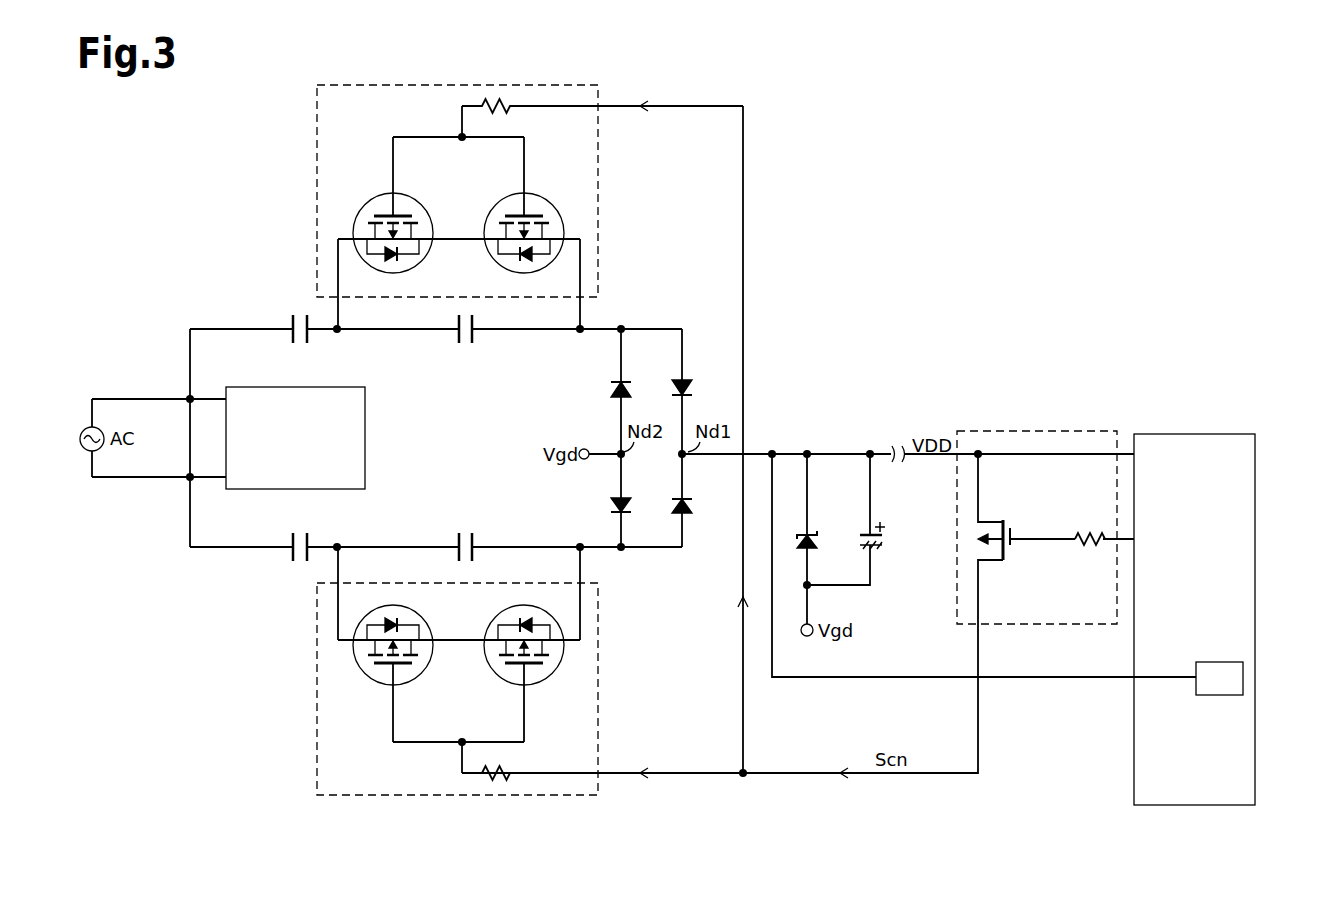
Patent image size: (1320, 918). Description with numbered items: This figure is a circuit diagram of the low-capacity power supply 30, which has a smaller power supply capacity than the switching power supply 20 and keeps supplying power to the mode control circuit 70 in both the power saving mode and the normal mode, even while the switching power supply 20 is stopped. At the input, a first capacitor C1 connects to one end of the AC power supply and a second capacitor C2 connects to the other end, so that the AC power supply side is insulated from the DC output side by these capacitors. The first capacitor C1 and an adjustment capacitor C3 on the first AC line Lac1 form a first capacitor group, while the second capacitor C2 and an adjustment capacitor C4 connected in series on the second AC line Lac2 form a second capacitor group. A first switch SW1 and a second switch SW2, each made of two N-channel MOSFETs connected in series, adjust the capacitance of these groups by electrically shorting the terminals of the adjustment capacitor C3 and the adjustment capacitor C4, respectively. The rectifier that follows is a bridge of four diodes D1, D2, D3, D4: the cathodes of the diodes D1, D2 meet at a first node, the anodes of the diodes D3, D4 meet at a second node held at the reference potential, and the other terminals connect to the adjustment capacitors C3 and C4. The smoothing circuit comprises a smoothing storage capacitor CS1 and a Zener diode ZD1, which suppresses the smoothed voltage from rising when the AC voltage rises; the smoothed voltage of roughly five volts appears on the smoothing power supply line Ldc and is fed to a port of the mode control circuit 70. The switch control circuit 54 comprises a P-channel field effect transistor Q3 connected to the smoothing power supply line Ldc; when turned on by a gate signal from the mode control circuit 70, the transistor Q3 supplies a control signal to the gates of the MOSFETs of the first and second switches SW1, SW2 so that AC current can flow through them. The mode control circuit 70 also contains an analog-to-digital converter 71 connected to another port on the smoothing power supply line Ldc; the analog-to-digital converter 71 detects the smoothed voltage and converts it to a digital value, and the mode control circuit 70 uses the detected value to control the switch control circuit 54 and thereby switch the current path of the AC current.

The switching power supply 20 is at (365, 440).
The low-capacity power supply 30 is at (919, 243).
The switch control circuit 54 is at (1037, 483).
The mode control circuit 70 is at (1224, 593).
The A/D converter 71 is at (1243, 680).
The first switch SW1 is at (462, 85).
The second switch SW2 is at (462, 795).
The first capacitor C1 is at (297, 314).
The second capacitor C2 is at (296, 530).
The adjustment capacitor C3 is at (467, 348).
The adjustment capacitor C4 is at (464, 529).
The diode D1 is at (687, 382).
The diode D2 is at (689, 514).
The diode D3 is at (626, 383).
The diode D4 is at (615, 502).
The Zener diode ZD1 is at (814, 552).
The smoothing storage capacitor CS1 is at (877, 550).
The field effect transistor Q3 is at (1012, 533).
The smoothing power supply line Ldc is at (790, 452).
The first AC line Lac1 is at (139, 397).
The second AC line Lac2 is at (139, 480).